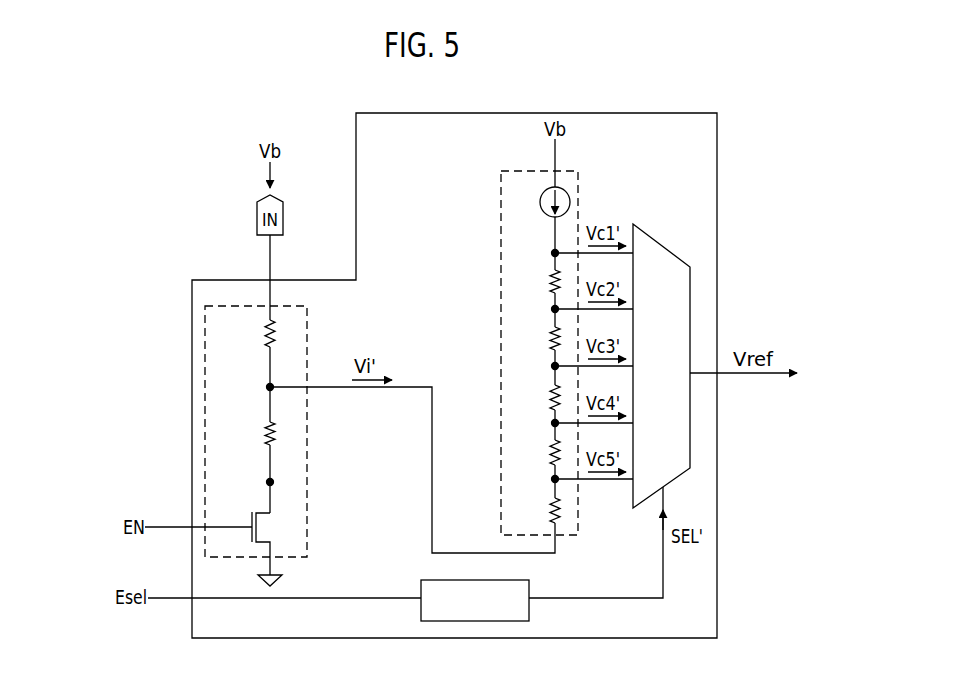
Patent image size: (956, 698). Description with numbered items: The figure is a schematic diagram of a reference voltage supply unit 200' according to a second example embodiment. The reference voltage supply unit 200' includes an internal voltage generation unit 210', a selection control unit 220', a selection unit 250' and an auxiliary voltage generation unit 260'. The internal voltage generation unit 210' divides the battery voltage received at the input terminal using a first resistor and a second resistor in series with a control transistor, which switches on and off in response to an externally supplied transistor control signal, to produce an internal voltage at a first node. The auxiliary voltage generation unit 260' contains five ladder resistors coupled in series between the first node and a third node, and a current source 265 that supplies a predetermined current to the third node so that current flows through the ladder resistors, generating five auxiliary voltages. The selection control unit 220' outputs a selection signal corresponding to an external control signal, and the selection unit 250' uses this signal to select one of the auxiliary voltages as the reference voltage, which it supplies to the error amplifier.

The reference voltage supply unit 200' is at (454, 351).
The internal voltage generation unit 210' is at (221, 446).
The selection control unit 220' is at (475, 631).
The selection unit 250' is at (669, 350).
The auxiliary voltage generation unit 260' is at (515, 353).
The current source 265 is at (537, 188).